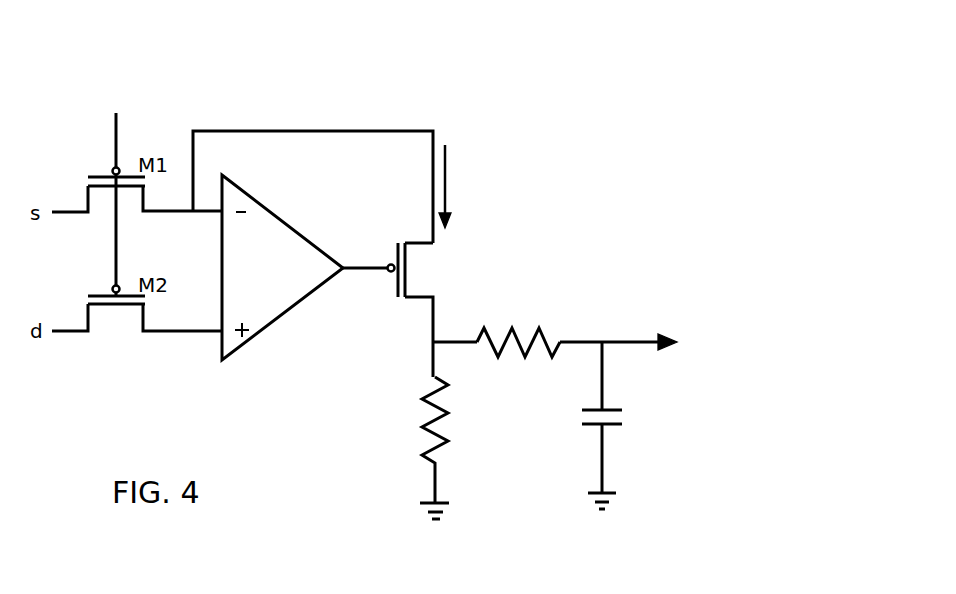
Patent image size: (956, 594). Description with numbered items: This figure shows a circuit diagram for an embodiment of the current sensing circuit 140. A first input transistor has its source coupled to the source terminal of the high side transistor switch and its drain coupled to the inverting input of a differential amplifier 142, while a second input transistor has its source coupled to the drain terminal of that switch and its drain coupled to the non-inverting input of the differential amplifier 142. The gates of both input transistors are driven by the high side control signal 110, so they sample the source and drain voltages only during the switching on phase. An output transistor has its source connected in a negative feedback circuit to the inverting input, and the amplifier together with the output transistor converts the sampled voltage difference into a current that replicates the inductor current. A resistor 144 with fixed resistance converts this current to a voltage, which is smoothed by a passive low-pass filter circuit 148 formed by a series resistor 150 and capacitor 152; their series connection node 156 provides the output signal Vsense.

The high side control signal 110 is at (114, 194).
The current sensing circuit 140 is at (592, 205).
The differential amplifier 142 is at (287, 312).
The resistor 144 is at (422, 430).
The passive low-pass filter circuit 148 is at (538, 388).
The resistor 150 is at (520, 330).
The capacitor 152 is at (627, 418).
The series connection node 156 is at (623, 338).